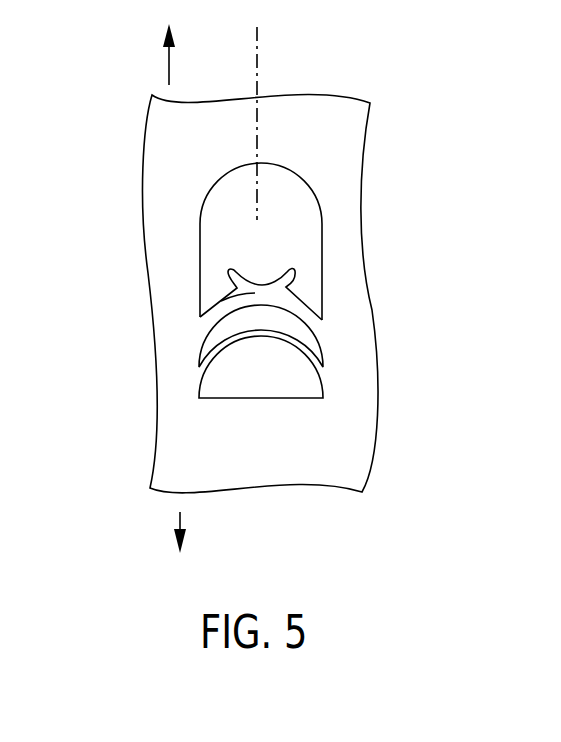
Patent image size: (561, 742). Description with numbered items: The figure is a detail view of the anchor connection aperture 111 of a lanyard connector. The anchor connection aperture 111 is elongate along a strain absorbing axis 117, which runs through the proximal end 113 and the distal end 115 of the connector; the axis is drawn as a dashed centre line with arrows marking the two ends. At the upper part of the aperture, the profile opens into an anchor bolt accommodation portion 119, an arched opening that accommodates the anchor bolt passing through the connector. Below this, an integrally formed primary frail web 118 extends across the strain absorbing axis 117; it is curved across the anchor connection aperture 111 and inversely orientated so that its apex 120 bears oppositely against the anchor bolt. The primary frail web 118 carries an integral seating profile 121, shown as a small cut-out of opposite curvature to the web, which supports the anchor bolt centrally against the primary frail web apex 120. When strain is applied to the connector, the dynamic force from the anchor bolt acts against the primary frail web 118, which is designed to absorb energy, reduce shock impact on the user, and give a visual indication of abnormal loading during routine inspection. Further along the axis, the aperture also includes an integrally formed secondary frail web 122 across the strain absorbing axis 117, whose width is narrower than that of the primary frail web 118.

The anchor connection aperture 111 is at (405, 116).
The proximal end 113 is at (178, 518).
The distal end 115 is at (168, 63).
The strain absorbing axis 117 is at (262, 52).
The primary frail web 118 is at (298, 303).
The anchor bolt accommodation portion 119 is at (300, 217).
The apex 120 is at (200, 317).
The seating profile 121 is at (295, 270).
The secondary frail web 122 is at (303, 355).